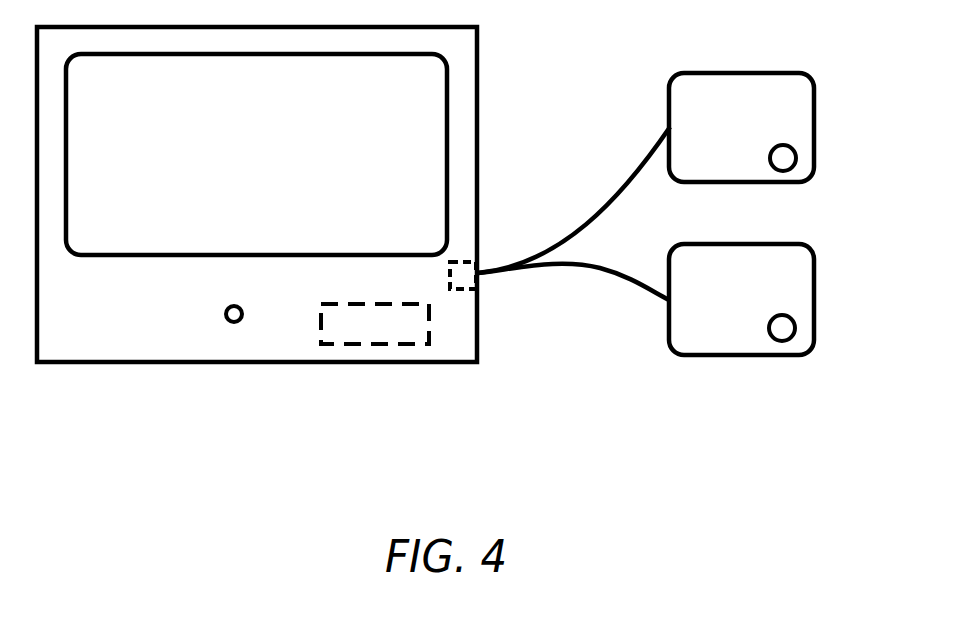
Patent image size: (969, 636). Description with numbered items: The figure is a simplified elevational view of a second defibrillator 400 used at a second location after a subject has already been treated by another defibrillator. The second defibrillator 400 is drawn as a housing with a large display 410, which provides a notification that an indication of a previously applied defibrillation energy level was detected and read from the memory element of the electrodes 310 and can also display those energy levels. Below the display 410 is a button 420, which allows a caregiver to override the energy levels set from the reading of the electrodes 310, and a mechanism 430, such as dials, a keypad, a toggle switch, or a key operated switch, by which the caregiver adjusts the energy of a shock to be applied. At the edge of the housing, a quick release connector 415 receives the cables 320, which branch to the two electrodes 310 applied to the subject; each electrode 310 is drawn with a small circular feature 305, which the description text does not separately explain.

The second defibrillator 400 is at (143, 326).
The display 410 is at (380, 111).
The quick release connector 415 is at (467, 279).
The button 420 is at (236, 325).
The mechanism 430 is at (367, 327).
The cables 320 is at (572, 235).
The electrodes 310 is at (756, 132).
The button 305 is at (783, 160).